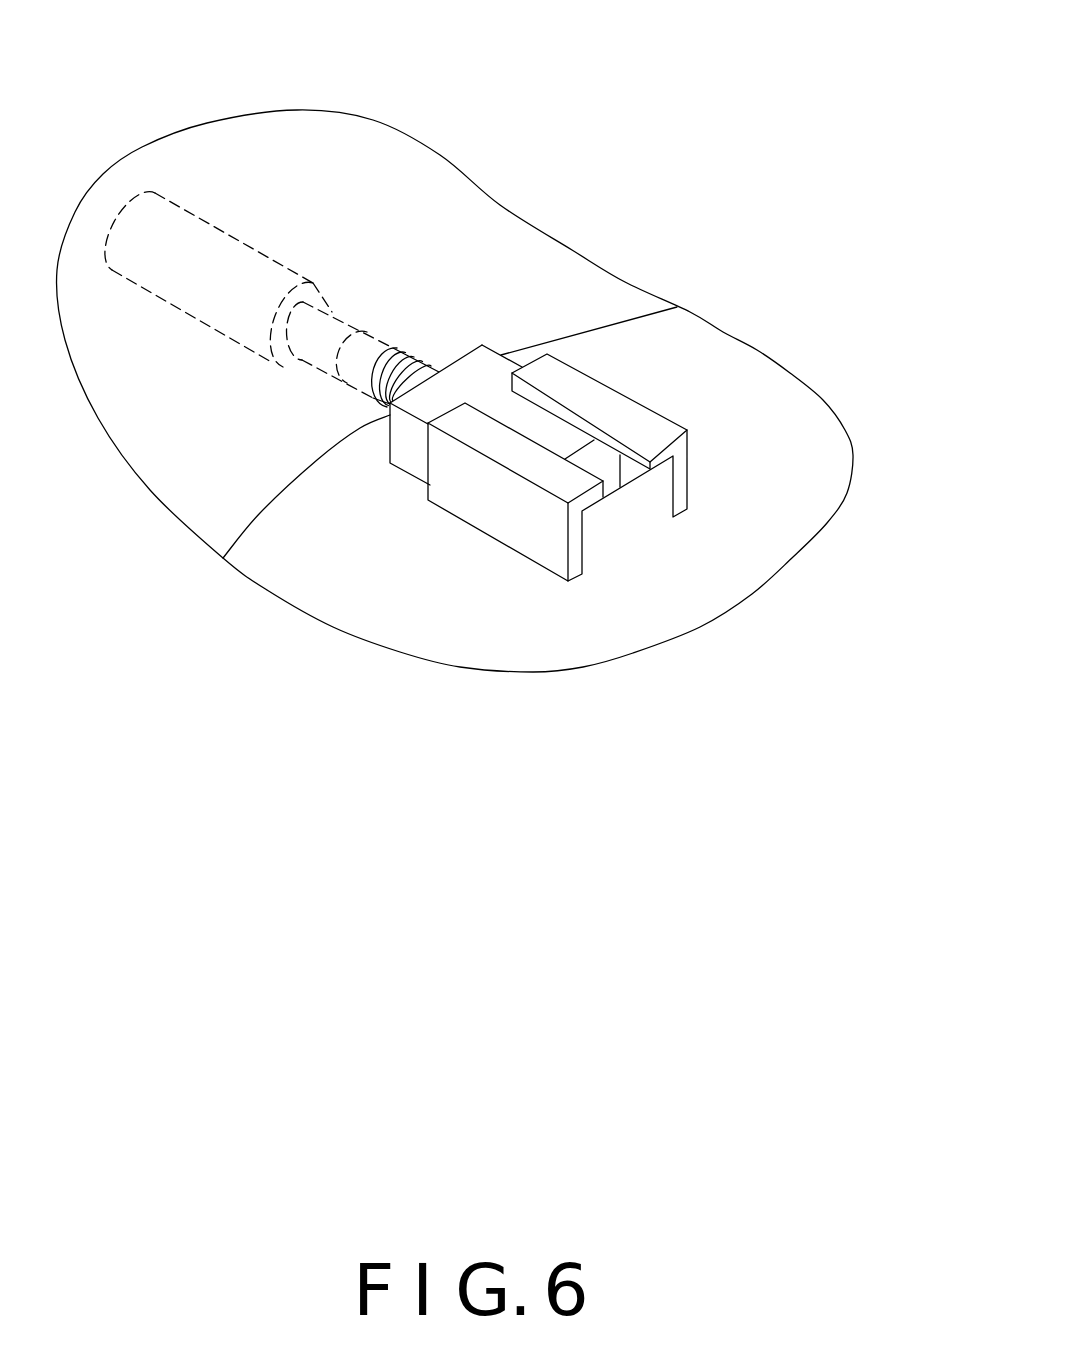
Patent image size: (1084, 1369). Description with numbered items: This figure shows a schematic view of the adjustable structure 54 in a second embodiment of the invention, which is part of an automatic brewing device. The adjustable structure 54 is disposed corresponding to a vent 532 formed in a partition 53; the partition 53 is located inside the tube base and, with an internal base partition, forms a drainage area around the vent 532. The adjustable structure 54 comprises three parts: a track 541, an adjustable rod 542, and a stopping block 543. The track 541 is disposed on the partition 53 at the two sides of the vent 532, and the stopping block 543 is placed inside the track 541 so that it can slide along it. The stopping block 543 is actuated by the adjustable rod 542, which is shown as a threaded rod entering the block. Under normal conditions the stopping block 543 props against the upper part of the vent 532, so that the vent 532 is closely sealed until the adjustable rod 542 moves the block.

The partition 53 is at (775, 453).
The vent 532 is at (587, 531).
The adjustable structure 54 is at (558, 252).
The track 541 is at (641, 427).
The adjustable rod 542 is at (392, 406).
The stopping block 543 is at (480, 375).